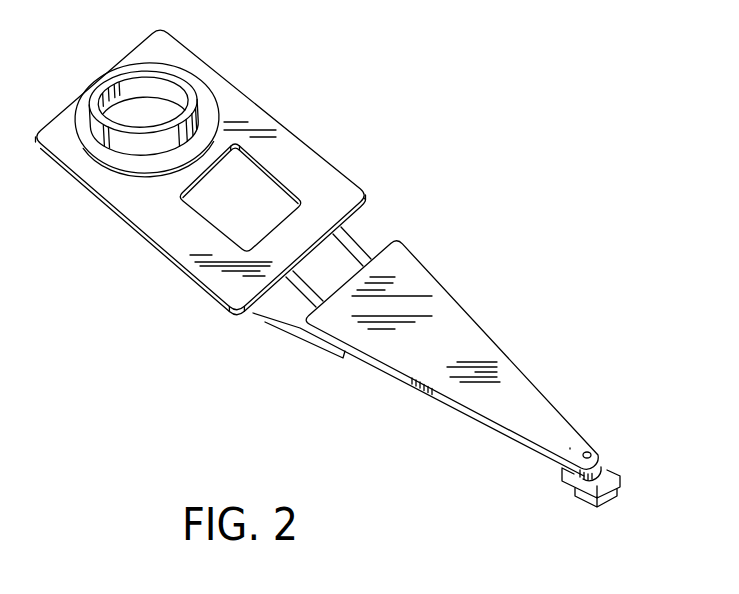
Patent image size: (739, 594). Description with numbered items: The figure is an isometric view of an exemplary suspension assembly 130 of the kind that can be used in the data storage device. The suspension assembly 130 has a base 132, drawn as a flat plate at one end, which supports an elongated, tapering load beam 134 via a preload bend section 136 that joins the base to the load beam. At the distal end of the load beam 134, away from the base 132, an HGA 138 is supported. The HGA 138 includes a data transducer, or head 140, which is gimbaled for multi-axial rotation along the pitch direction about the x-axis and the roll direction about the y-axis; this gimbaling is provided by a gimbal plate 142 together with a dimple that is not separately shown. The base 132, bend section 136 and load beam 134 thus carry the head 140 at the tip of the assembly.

The suspension assembly 130 is at (385, 285).
The base 132 is at (275, 112).
The load beam 134 is at (475, 313).
The preload bend section 136 is at (268, 330).
The HGA 138 is at (617, 453).
The data transducer (head) 140 is at (586, 505).
The gimbal plate 142 is at (623, 472).